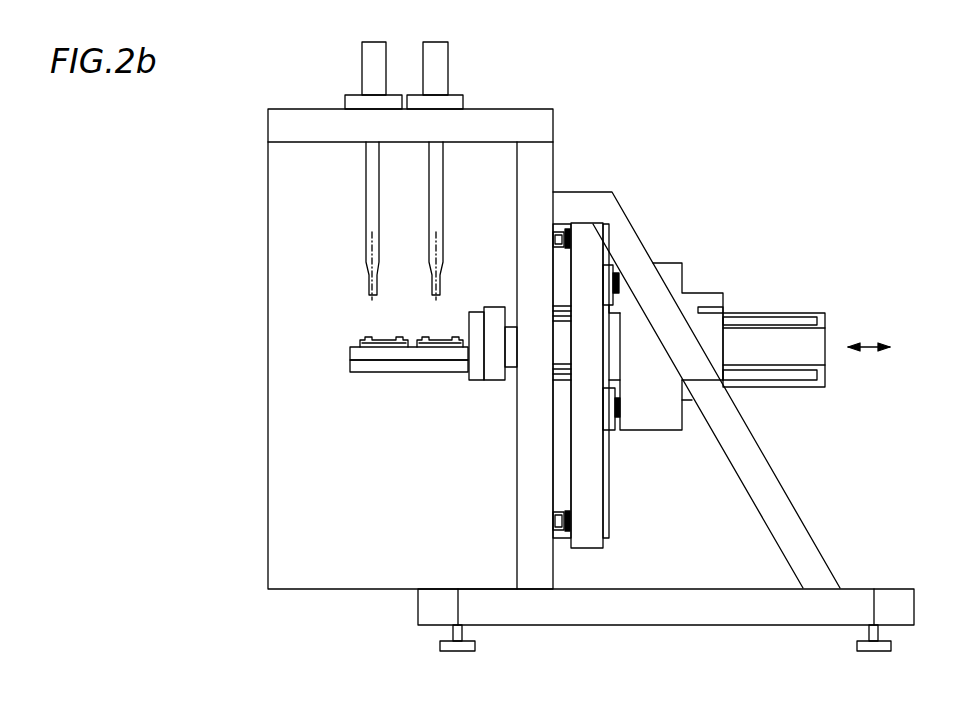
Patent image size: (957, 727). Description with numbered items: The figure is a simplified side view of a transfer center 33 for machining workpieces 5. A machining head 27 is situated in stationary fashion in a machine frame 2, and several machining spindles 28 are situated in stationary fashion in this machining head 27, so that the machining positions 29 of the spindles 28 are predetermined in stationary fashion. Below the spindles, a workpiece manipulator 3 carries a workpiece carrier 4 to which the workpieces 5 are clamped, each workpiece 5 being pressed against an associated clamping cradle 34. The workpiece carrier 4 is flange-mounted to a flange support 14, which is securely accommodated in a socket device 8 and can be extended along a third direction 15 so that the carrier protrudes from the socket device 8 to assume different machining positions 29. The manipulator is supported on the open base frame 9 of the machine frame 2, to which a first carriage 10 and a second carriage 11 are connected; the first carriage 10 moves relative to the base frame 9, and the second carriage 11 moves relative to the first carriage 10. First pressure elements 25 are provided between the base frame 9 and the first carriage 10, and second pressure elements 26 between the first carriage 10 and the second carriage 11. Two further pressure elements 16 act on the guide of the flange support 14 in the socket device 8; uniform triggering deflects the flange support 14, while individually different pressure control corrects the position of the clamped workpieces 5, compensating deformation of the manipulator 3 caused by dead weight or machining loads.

The machine frame 2 is at (555, 123).
The workpiece manipulator 3 is at (360, 381).
The workpiece carrier 4 is at (400, 373).
The workpiece 5 is at (382, 335).
The socket device 8 is at (667, 418).
The base frame 9 is at (525, 164).
The first carriage 10 is at (588, 240).
The second carriage 11 is at (670, 270).
The flange support 14 is at (775, 335).
The third direction 15 is at (869, 345).
The pressure element 16 is at (710, 310).
The first pressure element 25 is at (567, 226).
The second pressure element 26 is at (617, 271).
The machining head 27 is at (296, 104).
The machining spindle 28 is at (350, 57).
The machining position 29 is at (435, 240).
The transfer center 33 is at (256, 223).
The clamping cradle 34 is at (375, 343).